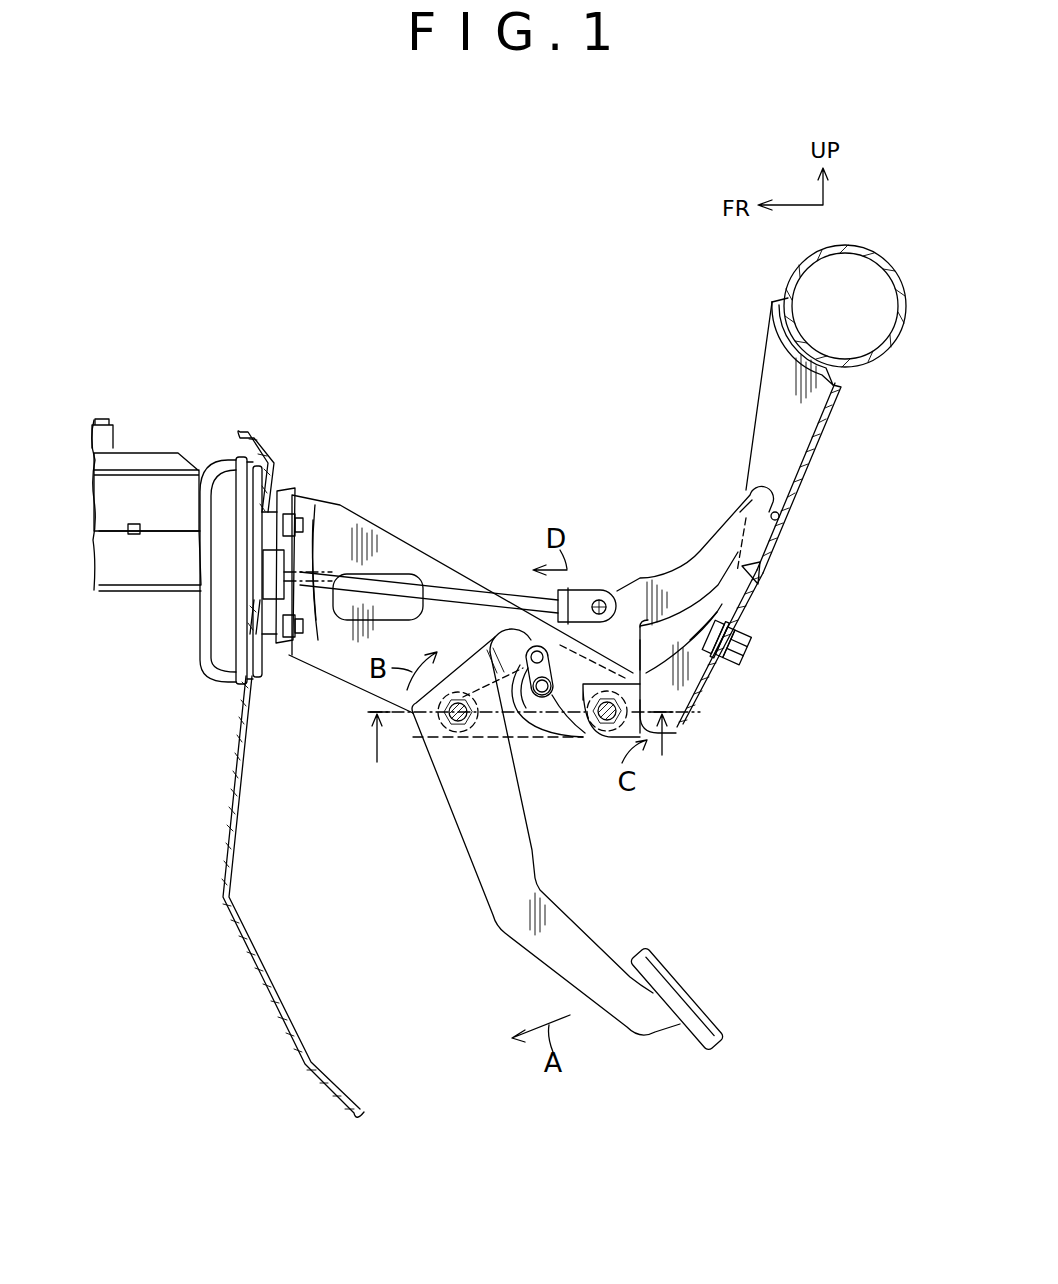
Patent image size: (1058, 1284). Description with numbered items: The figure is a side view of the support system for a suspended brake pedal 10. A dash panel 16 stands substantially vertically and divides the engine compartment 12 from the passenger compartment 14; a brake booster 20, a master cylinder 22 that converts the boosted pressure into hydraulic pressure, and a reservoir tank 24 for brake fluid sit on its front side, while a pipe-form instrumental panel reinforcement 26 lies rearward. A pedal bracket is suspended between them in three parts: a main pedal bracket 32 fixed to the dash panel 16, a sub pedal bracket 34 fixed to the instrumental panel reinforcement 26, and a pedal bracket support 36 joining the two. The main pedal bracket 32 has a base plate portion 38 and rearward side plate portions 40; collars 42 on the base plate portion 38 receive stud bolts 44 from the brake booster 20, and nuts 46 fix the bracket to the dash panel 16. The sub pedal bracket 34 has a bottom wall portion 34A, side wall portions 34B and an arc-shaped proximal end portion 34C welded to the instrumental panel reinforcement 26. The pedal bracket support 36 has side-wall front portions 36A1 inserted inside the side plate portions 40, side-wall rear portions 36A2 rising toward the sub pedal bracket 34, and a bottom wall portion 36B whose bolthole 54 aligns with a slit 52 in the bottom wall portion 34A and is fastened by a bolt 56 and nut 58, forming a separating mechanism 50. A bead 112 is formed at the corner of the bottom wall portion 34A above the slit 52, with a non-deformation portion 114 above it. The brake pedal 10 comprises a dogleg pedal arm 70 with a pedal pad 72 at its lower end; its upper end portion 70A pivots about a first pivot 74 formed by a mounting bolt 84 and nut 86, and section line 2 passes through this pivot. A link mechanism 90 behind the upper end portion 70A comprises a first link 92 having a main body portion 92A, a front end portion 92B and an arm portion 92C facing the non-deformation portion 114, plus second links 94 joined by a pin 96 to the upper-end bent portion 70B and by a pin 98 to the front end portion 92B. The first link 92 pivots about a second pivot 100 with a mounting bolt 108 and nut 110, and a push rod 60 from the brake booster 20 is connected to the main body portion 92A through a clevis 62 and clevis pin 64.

The brake pedal 10 is at (466, 905).
The engine compartment 12 is at (255, 774).
The passenger compartment 14 is at (570, 646).
The dash panel 16 is at (238, 836).
The brake booster 20 is at (196, 653).
The master cylinder 22 is at (158, 573).
The reservoir tank 24 is at (157, 460).
The instrumental panel reinforcement 26 is at (787, 290).
The main pedal bracket 32 is at (444, 590).
The sub pedal bracket 34 is at (754, 441).
The bottom wall portion 34A is at (822, 428).
The side wall portions 34B is at (758, 392).
The proximal end portion 34C is at (790, 345).
The pedal bracket support 36 is at (763, 700).
The side-wall front portion 36A1 is at (643, 740).
The side-wall rear portion 36A2 is at (718, 700).
The bottom wall portion 36B is at (704, 697).
The base plate portion 38 is at (277, 662).
The side plate portions 40 is at (353, 670).
The collars 42 is at (266, 633).
The stud bolts 44 is at (300, 633).
The nuts 46 is at (290, 650).
The separating mechanism 50 is at (773, 639).
The slit 52 is at (730, 660).
The bolthole 54 is at (747, 653).
The bolt 56 is at (750, 627).
The nut 58 is at (747, 607).
The push rod 60 is at (433, 578).
The clevis 62 is at (593, 561).
The clevis pin 64 is at (605, 592).
The pedal arm 70 is at (532, 770).
The upper end portion 70A is at (470, 677).
The upper-end bent portion 70B is at (521, 630).
The pedal pad 72 is at (682, 980).
The first pivot 74 is at (451, 766).
The mounting bolt 84 is at (463, 730).
The nut 86 is at (468, 732).
The link mechanism 90 is at (678, 697).
The first link 92 is at (643, 609).
The main body portion 92A is at (628, 657).
The front end portion 92B is at (530, 702).
The arm portion 92C is at (721, 540).
The second links 94 is at (483, 733).
The pin 96 is at (522, 650).
The pin 98 is at (553, 682).
The second pivot 100 is at (589, 768).
The mounting bolt 108 is at (563, 742).
The nut 110 is at (630, 748).
The bead 112 is at (759, 568).
The non-deformation portion 114 is at (779, 514).
The line 2- 2 is at (534, 748).